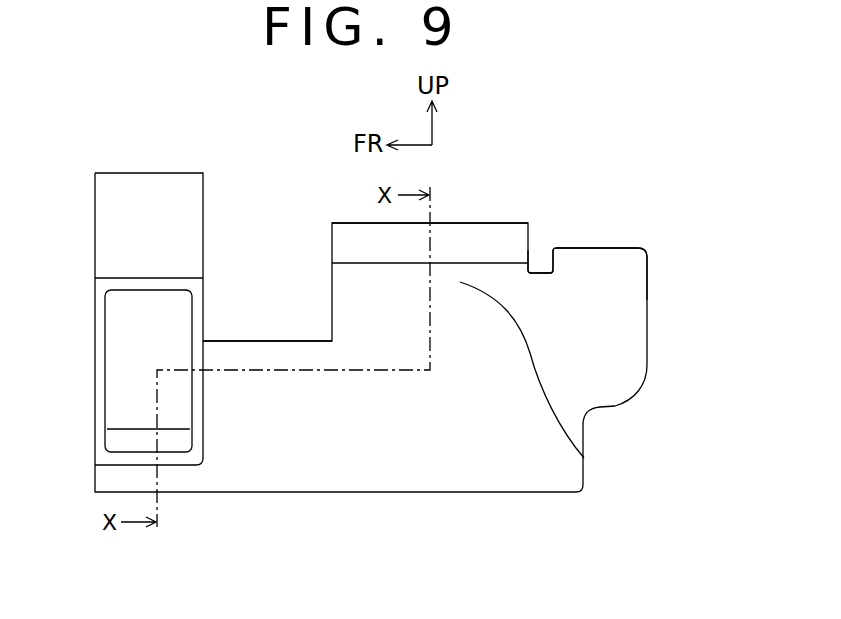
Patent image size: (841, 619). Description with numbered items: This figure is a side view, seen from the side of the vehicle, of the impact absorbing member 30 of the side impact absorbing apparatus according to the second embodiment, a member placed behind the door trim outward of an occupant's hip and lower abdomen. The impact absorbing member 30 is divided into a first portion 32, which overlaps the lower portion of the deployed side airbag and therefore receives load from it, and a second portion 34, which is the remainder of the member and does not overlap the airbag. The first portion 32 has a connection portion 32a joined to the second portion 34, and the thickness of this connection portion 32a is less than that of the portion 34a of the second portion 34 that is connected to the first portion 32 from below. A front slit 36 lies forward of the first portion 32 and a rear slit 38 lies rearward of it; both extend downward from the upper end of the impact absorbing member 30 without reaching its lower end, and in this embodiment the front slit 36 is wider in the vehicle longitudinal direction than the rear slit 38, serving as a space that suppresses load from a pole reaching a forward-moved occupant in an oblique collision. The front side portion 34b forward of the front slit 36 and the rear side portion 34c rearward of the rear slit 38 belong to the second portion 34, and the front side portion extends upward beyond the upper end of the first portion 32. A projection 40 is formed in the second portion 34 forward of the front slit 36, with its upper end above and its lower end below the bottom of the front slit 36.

The impact absorbing member 30 is at (603, 247).
The first portion 32 is at (482, 242).
The connection portion 32a is at (353, 250).
The second portion 34 is at (443, 492).
The portion of the second portion 34a is at (585, 458).
The front side portion 34b is at (117, 193).
The rear side portion 34c is at (617, 262).
The front slit 36 is at (275, 340).
The rear slit 38 is at (540, 268).
The projection 40 is at (145, 300).